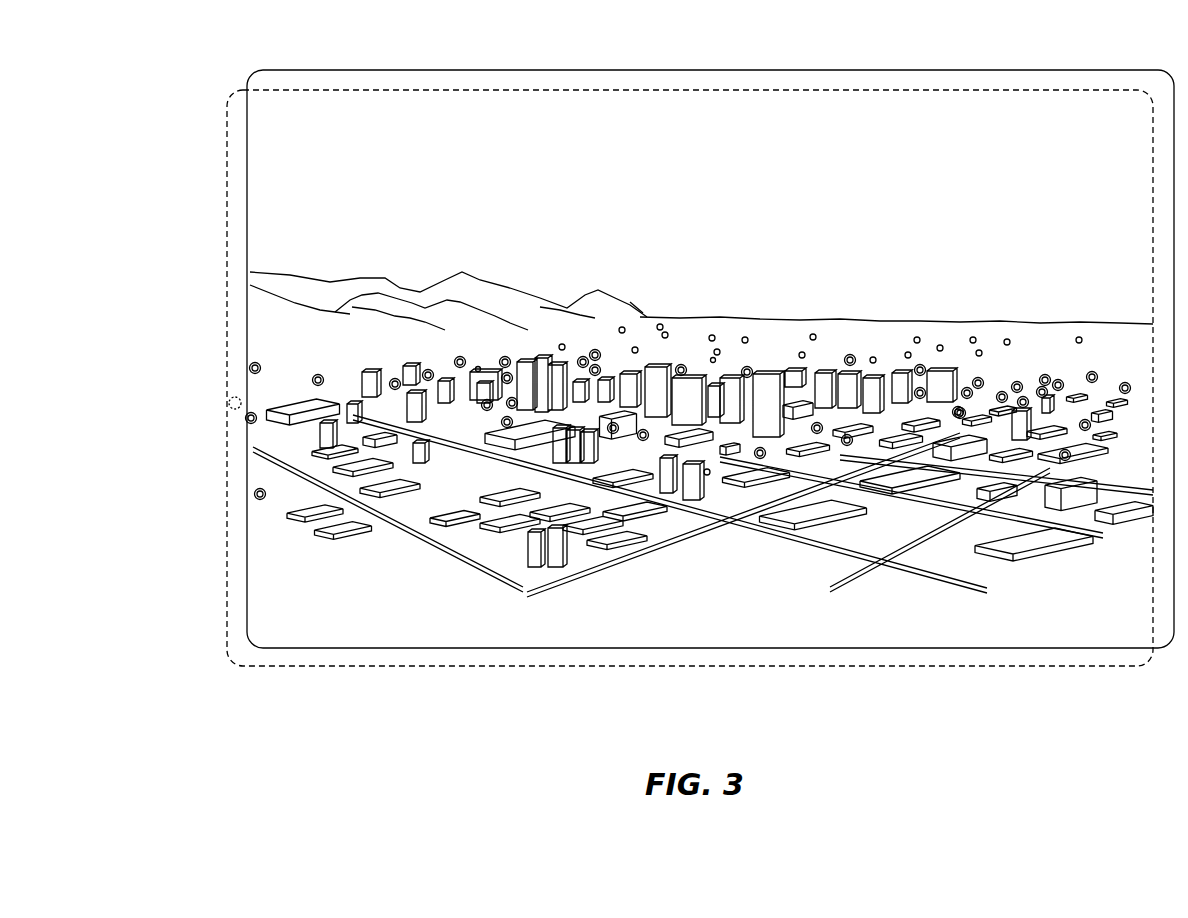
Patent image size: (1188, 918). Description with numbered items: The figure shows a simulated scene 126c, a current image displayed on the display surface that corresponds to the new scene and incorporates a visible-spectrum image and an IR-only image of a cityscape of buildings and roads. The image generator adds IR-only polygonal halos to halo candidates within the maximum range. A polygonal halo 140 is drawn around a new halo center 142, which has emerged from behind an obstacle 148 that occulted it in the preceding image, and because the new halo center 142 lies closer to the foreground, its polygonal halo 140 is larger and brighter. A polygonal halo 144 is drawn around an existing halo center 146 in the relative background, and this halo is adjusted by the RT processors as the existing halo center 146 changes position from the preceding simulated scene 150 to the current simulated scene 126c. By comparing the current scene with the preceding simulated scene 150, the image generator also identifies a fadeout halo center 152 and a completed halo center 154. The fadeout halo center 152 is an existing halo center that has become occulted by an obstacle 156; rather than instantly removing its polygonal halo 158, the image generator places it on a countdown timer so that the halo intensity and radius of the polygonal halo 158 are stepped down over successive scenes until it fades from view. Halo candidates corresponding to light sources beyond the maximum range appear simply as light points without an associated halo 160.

The simulated scene 126c is at (417, 70).
The preceding simulated scene 150 is at (226, 117).
The completed halo center 154 is at (228, 403).
The polygonal halo 140 is at (683, 363).
The new halo center 142 is at (713, 358).
The polygonal halo 144 is at (850, 355).
The existing halo center 146 is at (858, 365).
The obstacle 148 is at (655, 365).
The light points without an associated halo 160 is at (973, 337).
The fadeout halo center 152 is at (480, 366).
The obstacle 156 is at (472, 386).
The polygonal halo 158 is at (478, 366).